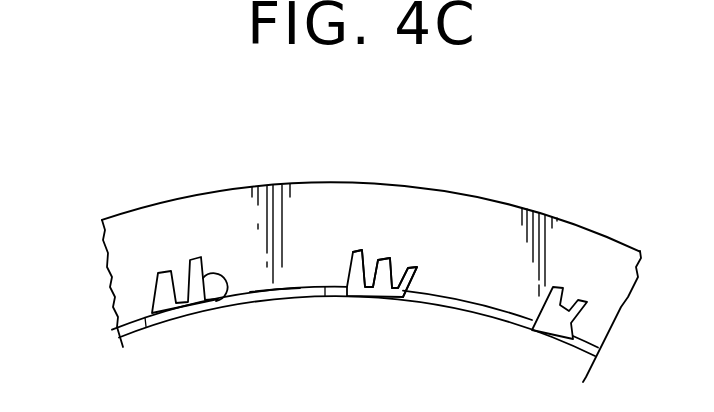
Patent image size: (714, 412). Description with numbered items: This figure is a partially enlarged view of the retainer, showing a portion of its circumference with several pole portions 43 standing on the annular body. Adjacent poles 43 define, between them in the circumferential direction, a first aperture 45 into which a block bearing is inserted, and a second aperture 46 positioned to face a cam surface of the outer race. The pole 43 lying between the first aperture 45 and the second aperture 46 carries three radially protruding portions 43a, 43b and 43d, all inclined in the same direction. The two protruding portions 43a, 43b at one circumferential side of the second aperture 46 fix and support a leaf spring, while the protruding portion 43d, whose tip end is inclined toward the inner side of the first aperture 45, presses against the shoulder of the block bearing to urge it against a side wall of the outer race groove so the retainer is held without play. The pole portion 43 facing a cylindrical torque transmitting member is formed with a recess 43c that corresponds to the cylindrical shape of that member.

The pole portion 43 is at (364, 294).
The radially protruding portion 43a is at (351, 256).
The radially protruding portion 43b is at (385, 260).
The recess 43c is at (225, 297).
The protruding portion 43d is at (412, 263).
The first aperture 45 is at (447, 310).
The second aperture 46 is at (280, 300).